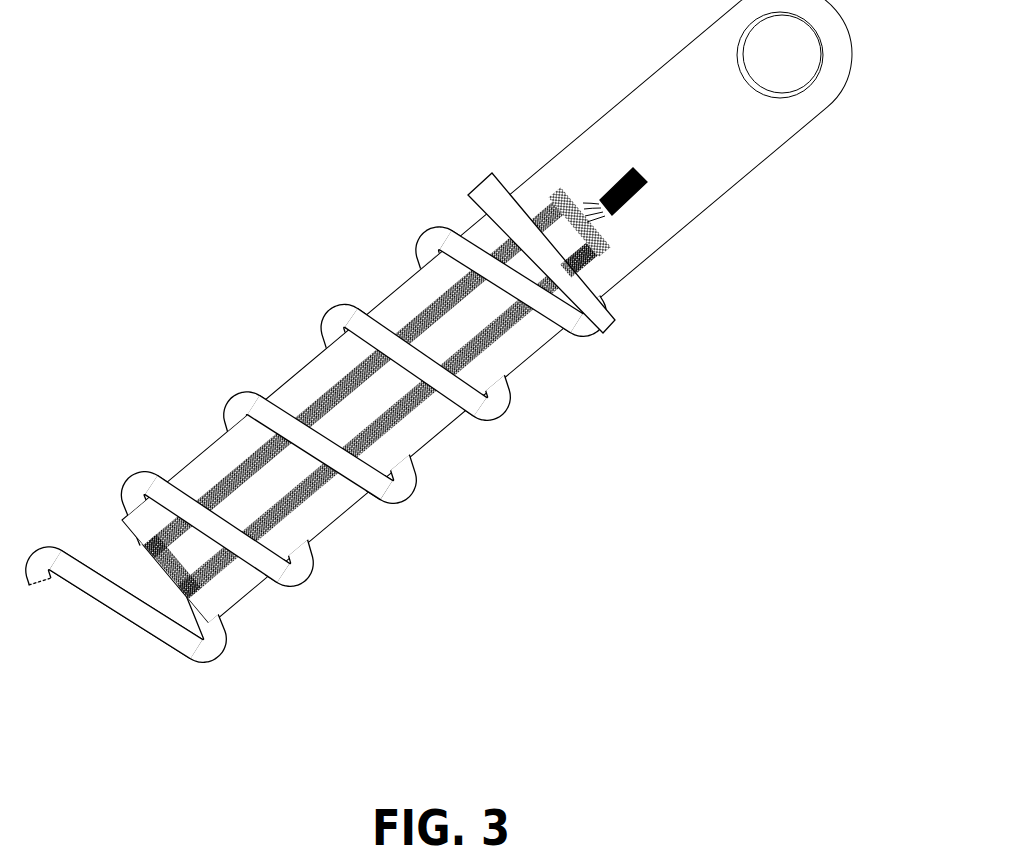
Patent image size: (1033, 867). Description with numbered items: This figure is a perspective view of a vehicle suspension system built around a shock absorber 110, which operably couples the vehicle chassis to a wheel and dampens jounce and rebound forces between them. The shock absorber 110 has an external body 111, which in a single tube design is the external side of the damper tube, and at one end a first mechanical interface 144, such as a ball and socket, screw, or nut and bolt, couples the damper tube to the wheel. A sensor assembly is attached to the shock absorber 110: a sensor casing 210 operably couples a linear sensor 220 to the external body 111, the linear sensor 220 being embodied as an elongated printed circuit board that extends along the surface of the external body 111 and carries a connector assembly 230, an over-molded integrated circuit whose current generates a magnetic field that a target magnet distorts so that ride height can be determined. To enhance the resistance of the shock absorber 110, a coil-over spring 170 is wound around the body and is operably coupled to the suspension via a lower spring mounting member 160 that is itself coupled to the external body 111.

The shock absorber 110 is at (454, 325).
The external body 111 is at (501, 312).
The first mechanical interface 144 is at (802, 102).
The lower spring mounting member 160 is at (602, 280).
The coil-over spring 170 is at (312, 444).
The sensor casing 210 is at (502, 184).
The linear sensor 220 is at (630, 278).
The connector assembly 230 is at (679, 225).